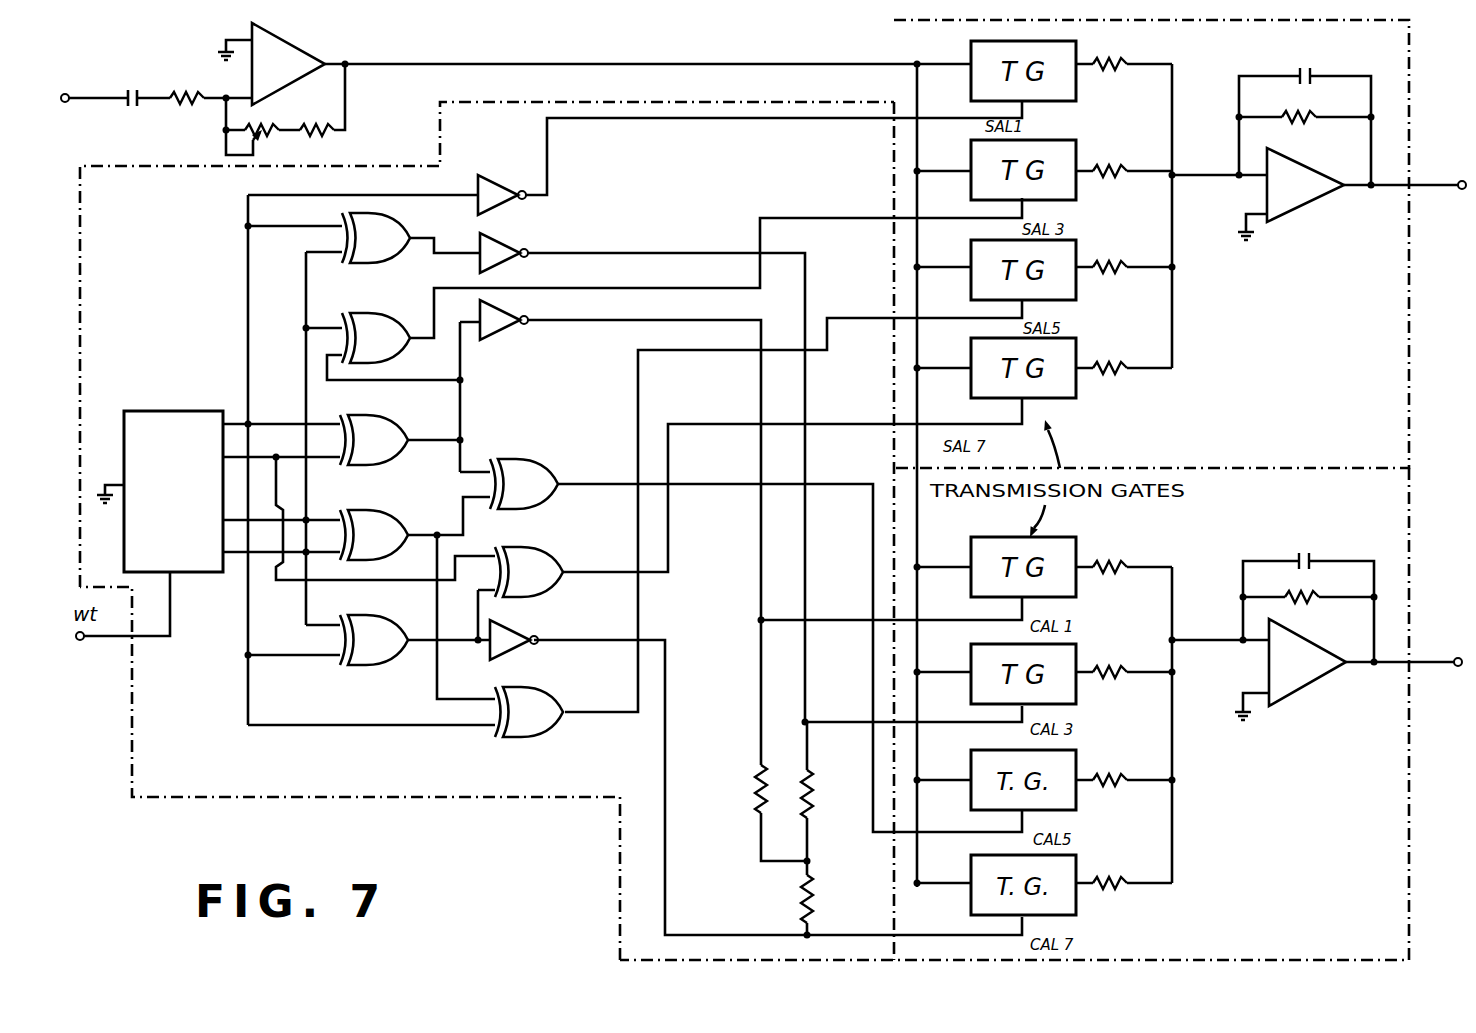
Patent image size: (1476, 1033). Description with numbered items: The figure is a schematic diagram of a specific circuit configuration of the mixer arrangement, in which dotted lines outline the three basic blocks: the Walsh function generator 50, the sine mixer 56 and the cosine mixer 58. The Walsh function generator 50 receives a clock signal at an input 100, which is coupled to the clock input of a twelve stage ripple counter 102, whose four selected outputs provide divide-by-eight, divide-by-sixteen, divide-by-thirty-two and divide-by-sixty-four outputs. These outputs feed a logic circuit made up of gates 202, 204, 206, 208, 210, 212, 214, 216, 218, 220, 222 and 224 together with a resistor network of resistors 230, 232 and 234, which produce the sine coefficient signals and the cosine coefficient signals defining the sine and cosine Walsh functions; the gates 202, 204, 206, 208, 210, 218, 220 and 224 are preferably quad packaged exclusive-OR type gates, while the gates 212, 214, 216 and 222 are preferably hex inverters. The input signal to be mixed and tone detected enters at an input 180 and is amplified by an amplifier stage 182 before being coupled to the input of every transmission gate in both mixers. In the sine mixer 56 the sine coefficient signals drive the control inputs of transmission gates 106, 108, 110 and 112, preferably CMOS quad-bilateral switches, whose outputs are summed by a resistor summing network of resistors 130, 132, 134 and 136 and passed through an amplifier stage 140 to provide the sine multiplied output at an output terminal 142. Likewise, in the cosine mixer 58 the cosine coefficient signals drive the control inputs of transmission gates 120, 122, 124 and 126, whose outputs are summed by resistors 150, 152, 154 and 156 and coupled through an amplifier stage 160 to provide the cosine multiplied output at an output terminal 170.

The Walsh function generator 50 is at (190, 800).
The sine mixer 56 is at (1312, 451).
The cosine mixer 58 is at (1320, 899).
The input 100 is at (82, 641).
The ripple counter 102 is at (207, 572).
The transmission gate 106 is at (1078, 88).
The transmission gate 108 is at (1078, 188).
The transmission gate 110 is at (1078, 290).
The transmission gate 112 is at (1078, 388).
The transmission gate 120 is at (1078, 585).
The transmission gate 122 is at (1078, 693).
The transmission gate 124 is at (1078, 800).
The transmission gate 126 is at (1078, 905).
The resistor 130 is at (1118, 62).
The resistor 132 is at (1130, 150).
The resistor 134 is at (1115, 262).
The resistor 136 is at (1115, 362).
The amplifier stage 140 is at (1236, 216).
The output terminal 142 is at (1458, 181).
The resistor 150 is at (1115, 561).
The resistor 152 is at (1115, 666).
The resistor 154 is at (1115, 775).
The resistor 156 is at (1130, 868).
The amplifier stage 160 is at (1235, 698).
The output terminal 170 is at (1455, 658).
The input 180 is at (70, 103).
The amplifier stage 182 is at (318, 44).
The gate 202 is at (396, 226).
The gate 204 is at (388, 334).
The gate 206 is at (396, 430).
The gate 208 is at (393, 518).
The gate 210 is at (392, 626).
The gate 212 is at (500, 185).
The gate 214 is at (508, 248).
The gate 216 is at (512, 318).
The gate 218 is at (532, 462).
The gate 220 is at (545, 563).
The gate 222 is at (528, 638).
The gate 224 is at (545, 695).
The resistor 230 is at (754, 782).
The resistor 232 is at (812, 786).
The resistor 234 is at (815, 890).